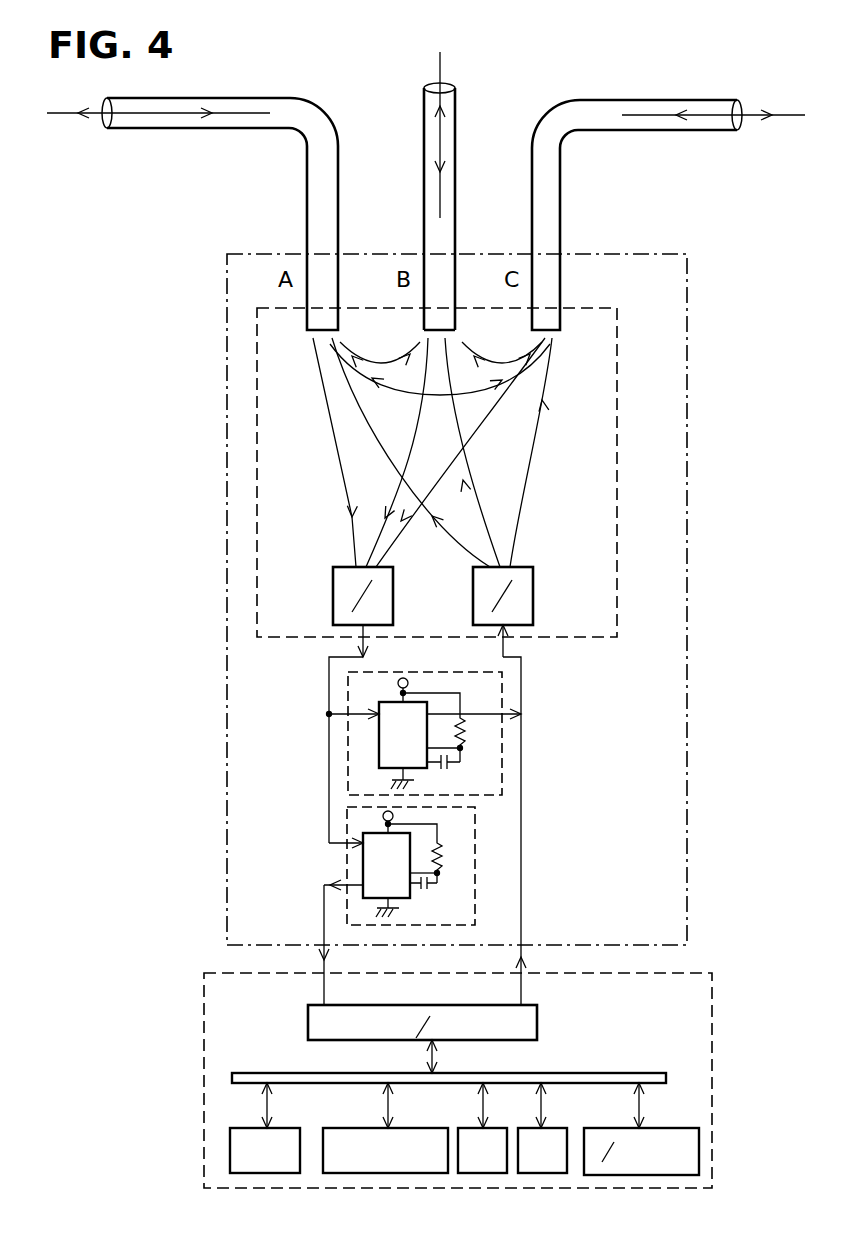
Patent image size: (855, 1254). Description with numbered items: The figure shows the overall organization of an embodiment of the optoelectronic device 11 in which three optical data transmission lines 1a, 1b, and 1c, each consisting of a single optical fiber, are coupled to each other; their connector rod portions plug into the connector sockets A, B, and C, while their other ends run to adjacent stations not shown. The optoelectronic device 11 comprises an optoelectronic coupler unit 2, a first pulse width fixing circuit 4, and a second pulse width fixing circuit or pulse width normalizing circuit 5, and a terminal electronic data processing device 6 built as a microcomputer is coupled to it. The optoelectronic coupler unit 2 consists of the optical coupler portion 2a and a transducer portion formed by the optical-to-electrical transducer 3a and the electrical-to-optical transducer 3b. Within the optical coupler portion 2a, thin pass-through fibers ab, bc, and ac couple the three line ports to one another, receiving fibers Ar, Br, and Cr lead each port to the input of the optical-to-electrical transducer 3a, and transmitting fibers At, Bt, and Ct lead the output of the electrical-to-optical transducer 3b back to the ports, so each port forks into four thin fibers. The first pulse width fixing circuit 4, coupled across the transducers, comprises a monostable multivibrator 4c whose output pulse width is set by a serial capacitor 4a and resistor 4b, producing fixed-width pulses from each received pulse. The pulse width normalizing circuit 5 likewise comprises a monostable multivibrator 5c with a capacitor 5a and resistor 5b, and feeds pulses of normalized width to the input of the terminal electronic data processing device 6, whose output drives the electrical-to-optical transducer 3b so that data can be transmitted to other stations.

The optical data transmission line 1a is at (238, 98).
The optical data transmission line 1b is at (455, 138).
The optical data transmission line 1c is at (628, 100).
The optoelectronic device 11 is at (628, 254).
The optoelectronic coupler unit 2 is at (588, 310).
The optical coupler portion 2a is at (305, 425).
The optical-to-electrical transducer 3a is at (394, 598).
The electrical-to-optical transducer 3b is at (534, 598).
The first pulse width fixing circuit 4 is at (504, 768).
The capacitor 4a is at (444, 766).
The resistor 4b is at (466, 735).
The monostable multivibrator 4c is at (379, 740).
The pulse width normalizing circuit 5 is at (476, 870).
The capacitor 5a is at (424, 889).
The resistor 5b is at (441, 854).
The monostable multivibrator 5c is at (363, 870).
The terminal electronic data processing device 6 is at (712, 1048).